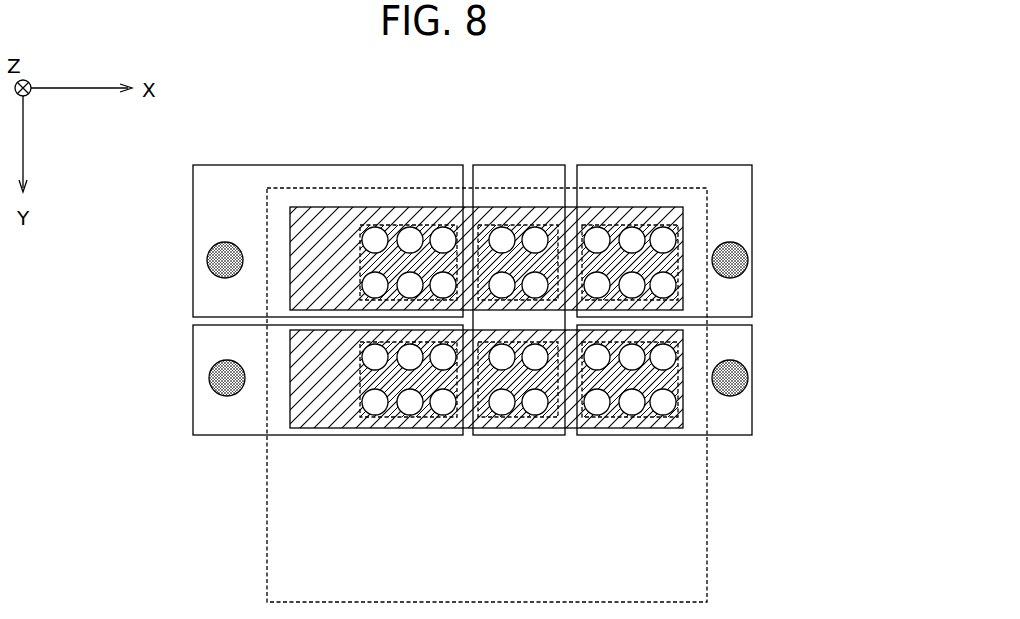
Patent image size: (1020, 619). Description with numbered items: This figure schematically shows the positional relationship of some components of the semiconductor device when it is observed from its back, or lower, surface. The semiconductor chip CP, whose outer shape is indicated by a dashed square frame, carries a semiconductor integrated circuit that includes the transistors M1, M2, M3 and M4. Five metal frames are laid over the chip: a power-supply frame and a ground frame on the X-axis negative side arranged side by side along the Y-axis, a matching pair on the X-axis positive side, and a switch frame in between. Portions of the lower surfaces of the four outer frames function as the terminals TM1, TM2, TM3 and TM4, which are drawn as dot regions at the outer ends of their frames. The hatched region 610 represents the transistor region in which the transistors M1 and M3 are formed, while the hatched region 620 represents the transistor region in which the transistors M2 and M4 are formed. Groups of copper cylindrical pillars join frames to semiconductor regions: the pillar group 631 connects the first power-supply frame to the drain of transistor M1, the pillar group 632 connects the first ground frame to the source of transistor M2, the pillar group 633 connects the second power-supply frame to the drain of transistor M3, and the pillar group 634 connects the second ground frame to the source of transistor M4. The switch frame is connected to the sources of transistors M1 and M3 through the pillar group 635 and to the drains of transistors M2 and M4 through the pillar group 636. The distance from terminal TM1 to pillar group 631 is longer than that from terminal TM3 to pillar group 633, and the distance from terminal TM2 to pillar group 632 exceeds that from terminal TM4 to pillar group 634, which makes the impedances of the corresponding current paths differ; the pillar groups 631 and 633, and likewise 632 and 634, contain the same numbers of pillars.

The hatched region 620 is at (435, 204).
The hatched region 610 is at (433, 437).
The pillar group 632 is at (397, 222).
The pillar group 636 is at (515, 220).
The pillar group 634 is at (647, 195).
The pillar group 631 is at (413, 417).
The pillar group 635 is at (513, 420).
The pillar group 633 is at (627, 447).
The transistor M1 is at (335, 413).
The transistor M2 is at (332, 225).
The transistor M3 is at (647, 415).
The transistor M4 is at (650, 220).
The terminal TM1 is at (212, 390).
The terminal TM2 is at (207, 263).
The terminal TM3 is at (746, 390).
The terminal TM4 is at (746, 272).
The semiconductor chip CP is at (708, 580).